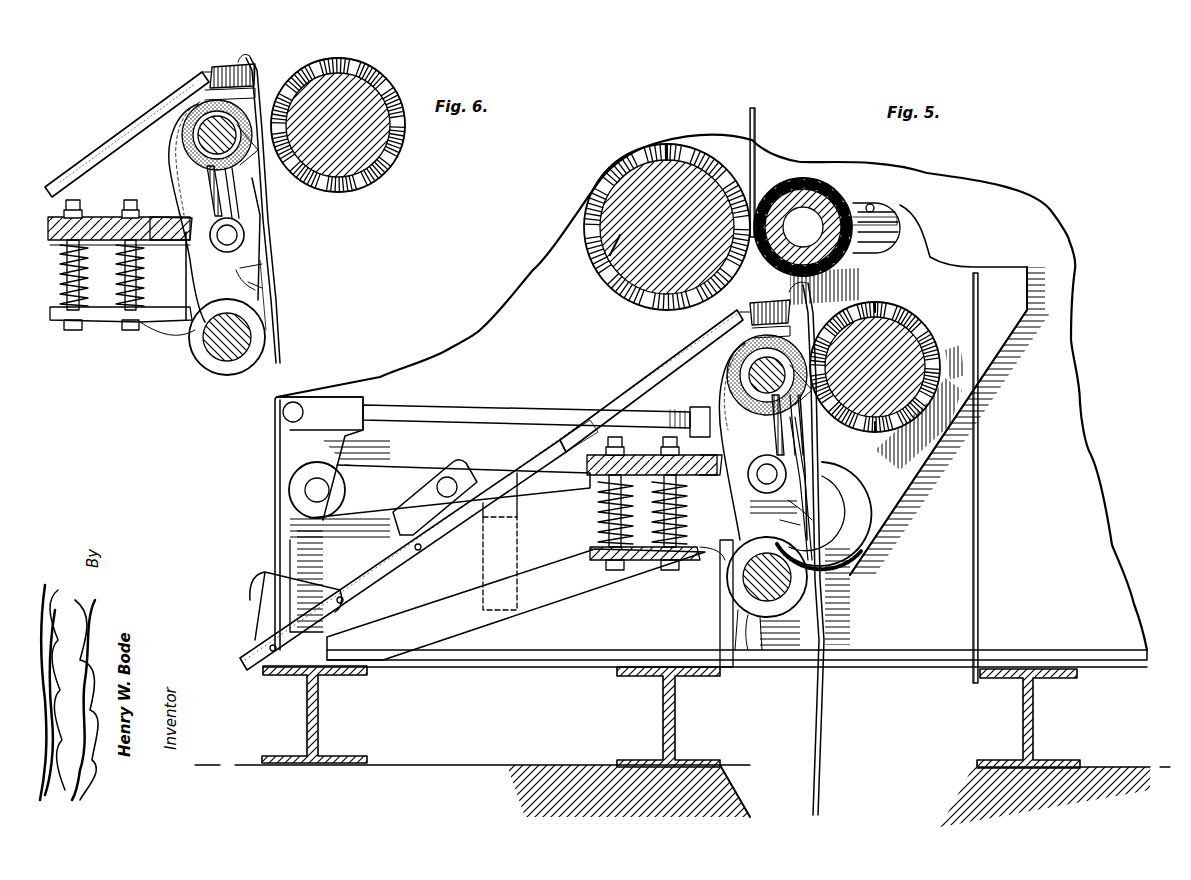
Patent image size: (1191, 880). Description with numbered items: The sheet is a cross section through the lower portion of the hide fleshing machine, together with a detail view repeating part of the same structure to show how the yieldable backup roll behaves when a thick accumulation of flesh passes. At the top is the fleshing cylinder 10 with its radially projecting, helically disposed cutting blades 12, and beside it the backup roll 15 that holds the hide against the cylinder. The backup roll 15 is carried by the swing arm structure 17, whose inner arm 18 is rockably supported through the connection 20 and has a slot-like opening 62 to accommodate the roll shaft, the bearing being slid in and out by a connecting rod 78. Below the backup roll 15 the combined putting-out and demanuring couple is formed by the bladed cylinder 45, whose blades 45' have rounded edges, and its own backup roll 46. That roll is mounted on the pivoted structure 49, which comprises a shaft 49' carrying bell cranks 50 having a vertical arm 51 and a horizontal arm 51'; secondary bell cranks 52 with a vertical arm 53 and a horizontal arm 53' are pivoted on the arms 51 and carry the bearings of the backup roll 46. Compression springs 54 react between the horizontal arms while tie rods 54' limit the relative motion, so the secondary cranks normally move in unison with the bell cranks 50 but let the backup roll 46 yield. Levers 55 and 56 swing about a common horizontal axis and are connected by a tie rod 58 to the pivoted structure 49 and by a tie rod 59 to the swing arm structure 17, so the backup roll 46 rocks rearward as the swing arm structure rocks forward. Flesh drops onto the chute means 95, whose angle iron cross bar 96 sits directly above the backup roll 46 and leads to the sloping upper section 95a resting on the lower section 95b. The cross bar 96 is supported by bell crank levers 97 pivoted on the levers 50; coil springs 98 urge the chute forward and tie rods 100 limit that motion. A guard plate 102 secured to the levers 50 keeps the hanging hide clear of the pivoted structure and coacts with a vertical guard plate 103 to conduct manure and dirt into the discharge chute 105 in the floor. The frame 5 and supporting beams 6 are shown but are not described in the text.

In FIG. 5, the frame 5 is at (1090, 453).
In FIG. 5, the supporting I-beams 6 is at (320, 712).
In FIG. 5, the fleshing cylinder 10 is at (600, 195).
In FIG. 5, the cutting blades 12 is at (672, 140).
In FIG. 5, the backup roll 15 is at (803, 180).
In FIG. 5, the swing arm structure 17 is at (1057, 284).
In FIG. 5, the inner arm 18 is at (1005, 325).
In FIG. 5, the connection 20 is at (855, 540).
In FIG. 6, the bladed cylinder 45 is at (337, 122).
In FIG. 5, the bladed cylinder 45 is at (884, 376).
In FIG. 6, the blades 45' is at (345, 125).
In FIG. 5, the blades 45' is at (861, 367).
In FIG. 6, the backup roll 46 is at (262, 62).
In FIG. 5, the backup roll 46 is at (745, 318).
In FIG. 6, the pivoted structure 49 is at (260, 217).
In FIG. 5, the pivoted structure 49 is at (745, 496).
In FIG. 6, the shaft 49' is at (214, 352).
In FIG. 5, the shaft 49' is at (751, 577).
In FIG. 6, the bell cranks 50 is at (248, 295).
In FIG. 5, the bell cranks 50 is at (790, 524).
In FIG. 6, the vertical arm 51 is at (273, 275).
In FIG. 5, the vertical arm 51 is at (816, 503).
In FIG. 6, the horizontal arm 51' is at (122, 333).
In FIG. 5, the horizontal arm 51' is at (657, 569).
In FIG. 6, the secondary bell cranks 52 is at (240, 198).
In FIG. 5, the secondary bell cranks 52 is at (790, 415).
In FIG. 6, the vertical arm 53 is at (259, 191).
In FIG. 5, the vertical arm 53 is at (804, 425).
In FIG. 6, the horizontal arm 53' is at (169, 208).
In FIG. 5, the horizontal arm 53' is at (705, 456).
In FIG. 6, the compression springs 54 is at (148, 275).
In FIG. 5, the compression springs 54 is at (681, 513).
In FIG. 6, the tie rods 54' is at (121, 243).
In FIG. 5, the tie rods 54' is at (657, 492).
In FIG. 5, the lever 55 is at (390, 465).
In FIG. 5, the lever 56 is at (282, 452).
In FIG. 5, the tie rod 58 is at (570, 490).
In FIG. 5, the tie rod 59 is at (490, 384).
In FIG. 5, the slot-like opening 62 is at (872, 205).
In FIG. 5, the connecting rod 78 is at (890, 220).
In FIG. 5, the chute means 95 is at (609, 378).
In FIG. 6, the upper chute section 95a is at (150, 112).
In FIG. 5, the upper chute section 95a is at (685, 375).
In FIG. 5, the lower chute section 95b is at (400, 566).
In FIG. 6, the angle iron cross bar 96 is at (225, 66).
In FIG. 5, the angle iron cross bar 96 is at (785, 310).
In FIG. 6, the bell crank levers 97 is at (180, 152).
In FIG. 5, the bell crank levers 97 is at (728, 388).
In FIG. 6, the coil springs 98 is at (60, 270).
In FIG. 5, the coil springs 98 is at (598, 528).
In FIG. 6, the tie rods 100 is at (80, 203).
In FIG. 5, the tie rods 100 is at (611, 448).
In FIG. 6, the guard plate 102 is at (245, 233).
In FIG. 5, the guard plate 102 is at (800, 470).
In FIG. 5, the guard plate 103 is at (980, 520).
In FIG. 5, the discharge chute 105 is at (960, 790).